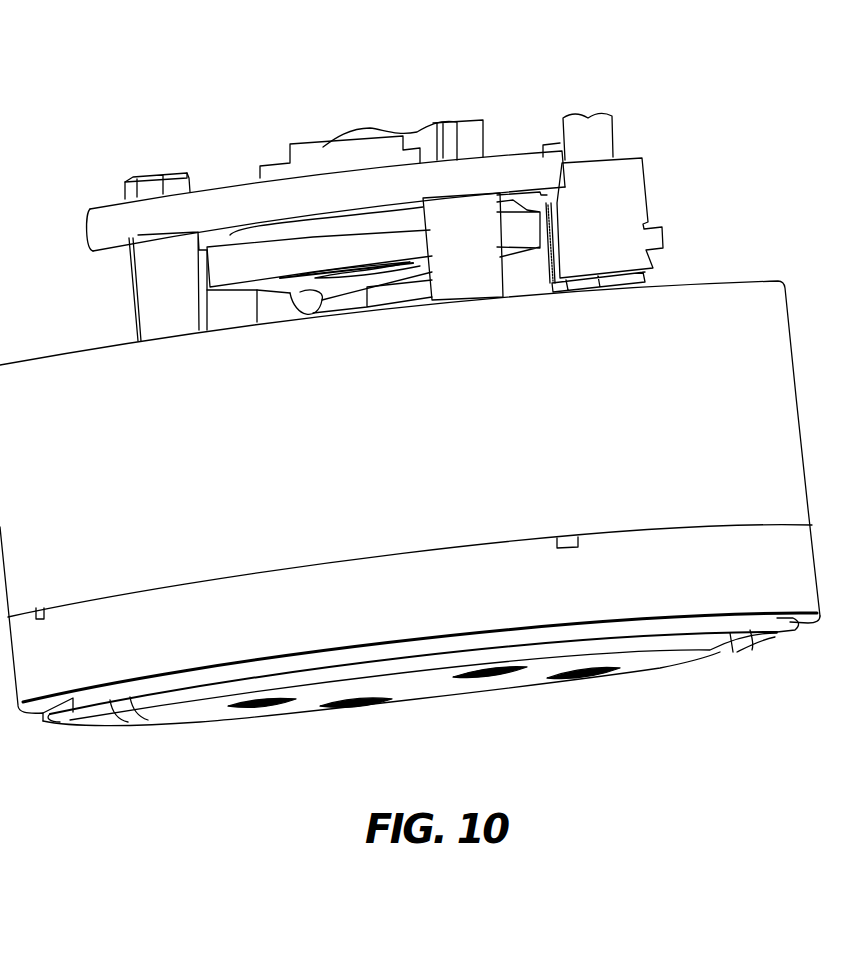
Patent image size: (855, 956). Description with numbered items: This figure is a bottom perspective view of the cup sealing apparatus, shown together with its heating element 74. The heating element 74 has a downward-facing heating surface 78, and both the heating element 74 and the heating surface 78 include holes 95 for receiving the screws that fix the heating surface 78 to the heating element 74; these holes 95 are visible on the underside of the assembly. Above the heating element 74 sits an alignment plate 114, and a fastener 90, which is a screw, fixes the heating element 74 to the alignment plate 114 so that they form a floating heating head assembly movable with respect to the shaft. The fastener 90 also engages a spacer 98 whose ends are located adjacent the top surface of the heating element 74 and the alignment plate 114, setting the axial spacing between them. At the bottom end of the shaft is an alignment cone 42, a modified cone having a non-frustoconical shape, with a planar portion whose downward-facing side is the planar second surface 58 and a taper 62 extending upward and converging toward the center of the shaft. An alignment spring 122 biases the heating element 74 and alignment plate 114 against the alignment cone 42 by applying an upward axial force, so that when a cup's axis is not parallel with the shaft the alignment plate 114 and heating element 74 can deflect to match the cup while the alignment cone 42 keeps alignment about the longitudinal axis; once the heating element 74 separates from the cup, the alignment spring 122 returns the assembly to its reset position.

The alignment cone 42 is at (237, 257).
The planar second surface 58 is at (310, 278).
The taper 62 is at (227, 243).
The heating element 74 is at (778, 349).
The heating surface 78 is at (658, 662).
The fastener 90 is at (152, 176).
The hole 95 is at (337, 710).
The spacer 98 is at (467, 223).
The alignment plate 114 is at (517, 163).
The alignment spring 122 is at (323, 293).